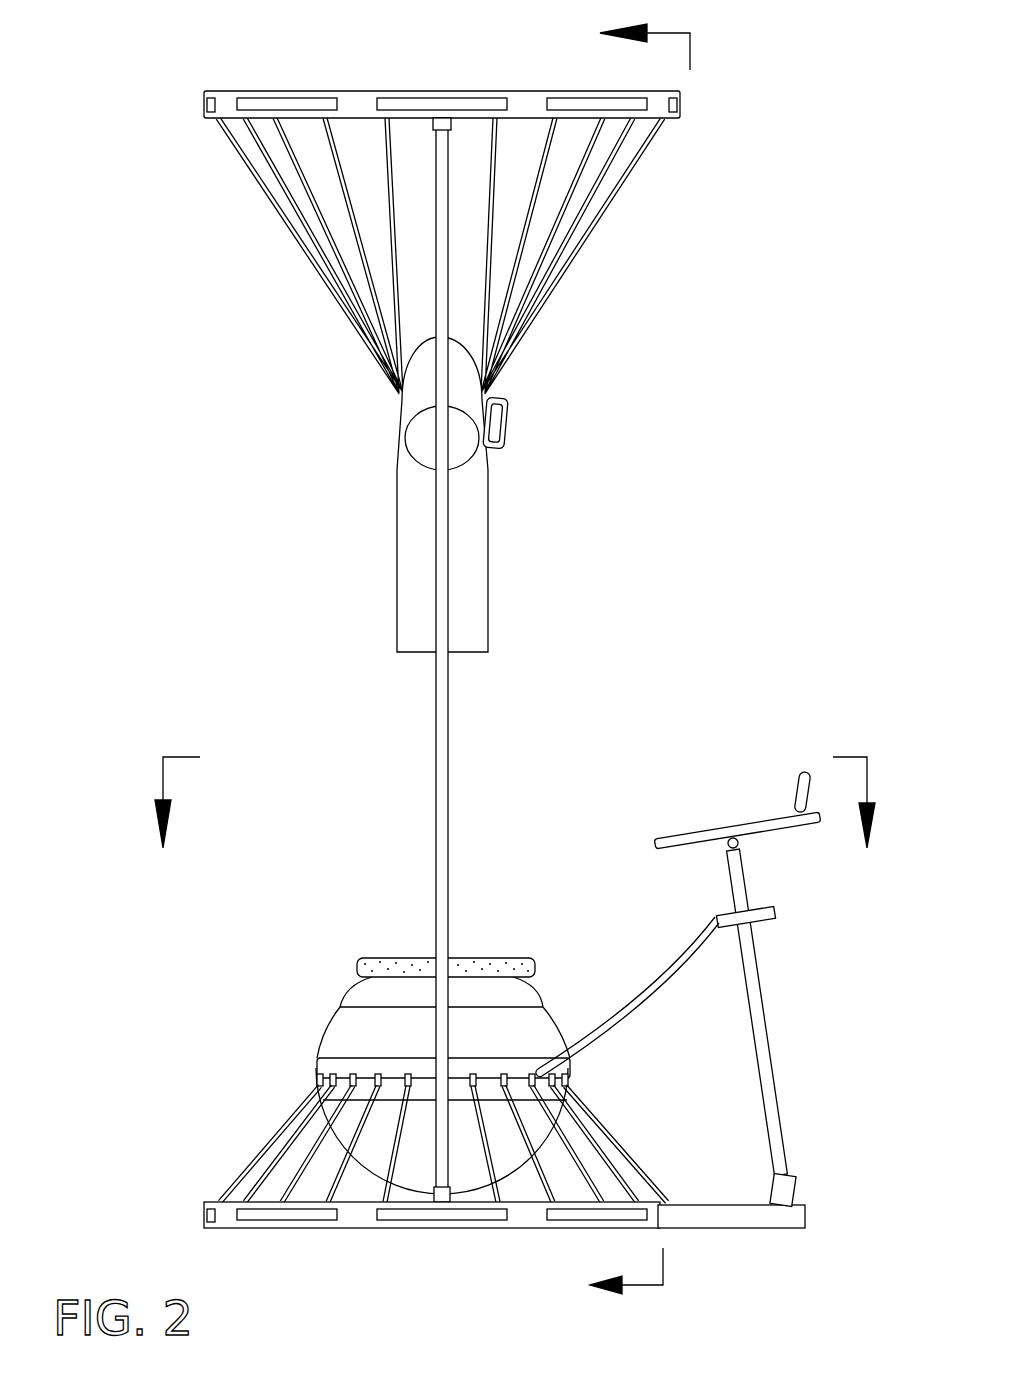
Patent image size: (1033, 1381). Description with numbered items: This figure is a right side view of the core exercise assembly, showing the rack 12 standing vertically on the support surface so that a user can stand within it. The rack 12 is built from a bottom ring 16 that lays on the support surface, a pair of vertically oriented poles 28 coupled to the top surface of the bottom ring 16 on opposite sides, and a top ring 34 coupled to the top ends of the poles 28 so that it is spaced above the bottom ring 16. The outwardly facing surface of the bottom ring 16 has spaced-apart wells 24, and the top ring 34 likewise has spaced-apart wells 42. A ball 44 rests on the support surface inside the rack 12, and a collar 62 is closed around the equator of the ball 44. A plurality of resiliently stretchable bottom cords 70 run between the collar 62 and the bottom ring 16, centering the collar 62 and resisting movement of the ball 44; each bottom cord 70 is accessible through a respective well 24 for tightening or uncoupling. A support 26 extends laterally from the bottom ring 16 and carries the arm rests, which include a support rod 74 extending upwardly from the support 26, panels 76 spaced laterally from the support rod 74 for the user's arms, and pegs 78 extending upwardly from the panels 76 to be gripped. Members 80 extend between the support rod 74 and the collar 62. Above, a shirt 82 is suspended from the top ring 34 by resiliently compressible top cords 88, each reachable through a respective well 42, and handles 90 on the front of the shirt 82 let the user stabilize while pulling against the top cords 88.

The rack 12 is at (735, 220).
The bottom ring 16 is at (386, 1241).
The wells 24 is at (415, 1213).
The support 26 is at (793, 1228).
The poles 28 is at (437, 738).
The top ring 34 is at (386, 60).
The wells 42 is at (568, 103).
The ball 44 is at (412, 973).
The collar 62 is at (488, 1072).
The bottom cords 70 is at (616, 1145).
The support rod 74 is at (698, 956).
The panels 76 is at (748, 826).
The pegs 78 is at (797, 773).
The members 80 is at (640, 997).
The shirt 82 is at (494, 502).
The top cords 88 is at (567, 257).
The handles 90 is at (507, 420).